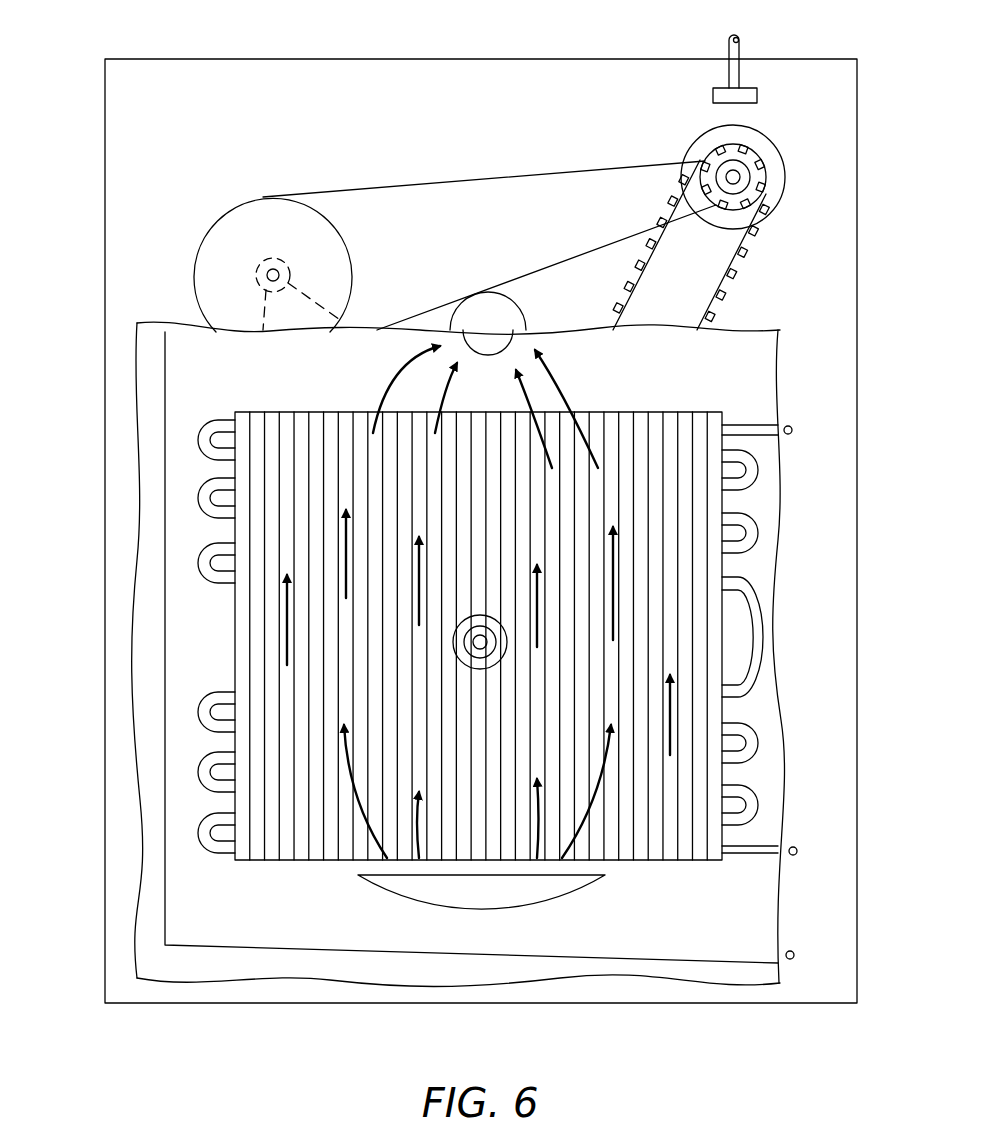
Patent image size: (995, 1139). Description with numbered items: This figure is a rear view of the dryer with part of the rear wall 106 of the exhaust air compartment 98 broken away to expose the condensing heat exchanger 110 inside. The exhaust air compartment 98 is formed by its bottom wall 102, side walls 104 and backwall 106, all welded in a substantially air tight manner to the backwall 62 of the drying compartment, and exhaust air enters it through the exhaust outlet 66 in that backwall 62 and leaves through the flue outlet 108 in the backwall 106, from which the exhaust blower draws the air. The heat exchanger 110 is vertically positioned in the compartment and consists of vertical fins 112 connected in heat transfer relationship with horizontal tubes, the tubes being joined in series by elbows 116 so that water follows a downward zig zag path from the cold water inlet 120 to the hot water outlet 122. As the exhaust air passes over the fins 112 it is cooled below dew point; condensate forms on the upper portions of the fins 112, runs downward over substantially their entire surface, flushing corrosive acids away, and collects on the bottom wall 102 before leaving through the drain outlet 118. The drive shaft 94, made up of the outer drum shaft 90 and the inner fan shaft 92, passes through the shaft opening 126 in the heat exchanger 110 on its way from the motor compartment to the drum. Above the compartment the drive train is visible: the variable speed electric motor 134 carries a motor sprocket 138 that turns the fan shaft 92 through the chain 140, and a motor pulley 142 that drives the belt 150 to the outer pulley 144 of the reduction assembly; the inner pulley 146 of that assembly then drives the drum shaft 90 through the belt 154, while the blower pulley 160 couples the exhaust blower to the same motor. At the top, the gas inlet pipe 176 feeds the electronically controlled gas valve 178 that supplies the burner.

The backwall 62 is at (175, 913).
The exhaust outlet 66 is at (462, 900).
The drum shaft 90 is at (484, 654).
The fan shaft 92 is at (483, 640).
The drive shaft 94 is at (474, 622).
The exhaust air compartment 98 is at (158, 447).
The bottom wall 102 is at (210, 945).
The side walls 104 is at (160, 545).
The backwall 106 is at (137, 323).
The flue outlet 108 is at (488, 348).
The condensing heat exchanger 110 is at (228, 664).
The vertical fins 112 is at (250, 628).
The elbows 116 is at (196, 838).
The drain outlet 118 is at (793, 952).
The cold water inlet 120 is at (790, 427).
The hot water outlet 122 is at (796, 848).
The shaft opening 126 is at (463, 652).
The variable speed electric motor 134 is at (705, 145).
The motor sprocket 138 is at (760, 182).
The chain 140 is at (725, 265).
The motor pulley 142 is at (745, 168).
The outer pulley 144 is at (223, 812).
The inner pulley 146 is at (272, 257).
The belt 150 is at (368, 183).
The belt 154 is at (258, 310).
The blower pulley 160 is at (510, 308).
The gas inlet pipe 176 is at (745, 42).
The gas valve 178 is at (757, 96).